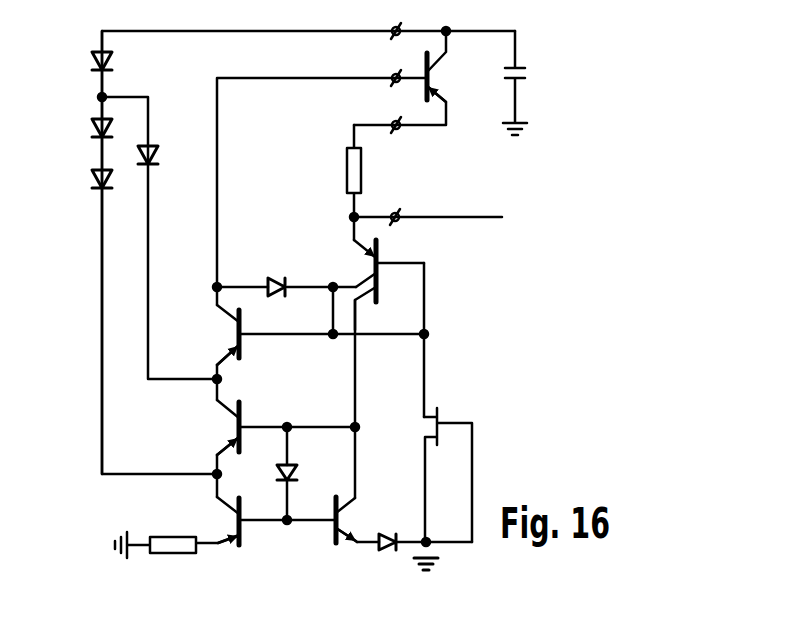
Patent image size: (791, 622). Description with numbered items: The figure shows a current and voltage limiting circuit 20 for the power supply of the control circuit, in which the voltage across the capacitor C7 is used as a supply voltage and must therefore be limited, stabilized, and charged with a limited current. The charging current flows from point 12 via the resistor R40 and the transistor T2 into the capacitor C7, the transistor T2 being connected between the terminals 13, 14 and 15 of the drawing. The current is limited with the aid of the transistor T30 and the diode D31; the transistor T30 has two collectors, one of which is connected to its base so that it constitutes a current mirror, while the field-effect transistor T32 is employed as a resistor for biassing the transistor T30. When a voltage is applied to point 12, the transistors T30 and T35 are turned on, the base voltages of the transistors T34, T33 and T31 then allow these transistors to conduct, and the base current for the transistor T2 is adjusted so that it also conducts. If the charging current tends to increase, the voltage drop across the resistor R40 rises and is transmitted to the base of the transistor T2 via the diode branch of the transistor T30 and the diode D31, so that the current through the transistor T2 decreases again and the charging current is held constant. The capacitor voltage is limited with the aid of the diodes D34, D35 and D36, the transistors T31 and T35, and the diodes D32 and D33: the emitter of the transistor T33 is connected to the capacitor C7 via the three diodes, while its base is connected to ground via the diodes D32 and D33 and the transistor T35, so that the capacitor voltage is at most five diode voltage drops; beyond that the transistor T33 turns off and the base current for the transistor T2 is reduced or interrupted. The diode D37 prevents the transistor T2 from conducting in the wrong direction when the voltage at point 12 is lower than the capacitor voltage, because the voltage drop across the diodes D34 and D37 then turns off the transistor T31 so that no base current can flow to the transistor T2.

The point 12 is at (396, 207).
The terminal 13 is at (396, 113).
The terminal 14 is at (396, 67).
The terminal 15 is at (397, 19).
The circuit arrangement 20 is at (86, 342).
The transistor T2 is at (432, 77).
The capacitor C7 is at (527, 72).
The resistor R40 is at (362, 178).
The transistor T30 is at (373, 265).
The transistor T31 is at (236, 334).
The field-effect transistor T32 is at (440, 420).
The transistor T33 is at (236, 427).
The transistor T34 is at (236, 520).
The transistor T35 is at (340, 518).
The diode D31 is at (283, 283).
The diode D32 is at (292, 478).
The diode D33 is at (386, 536).
The diode D34 is at (92, 62).
The diode D35 is at (92, 128).
The diode D36 is at (92, 178).
The diode D37 is at (158, 155).